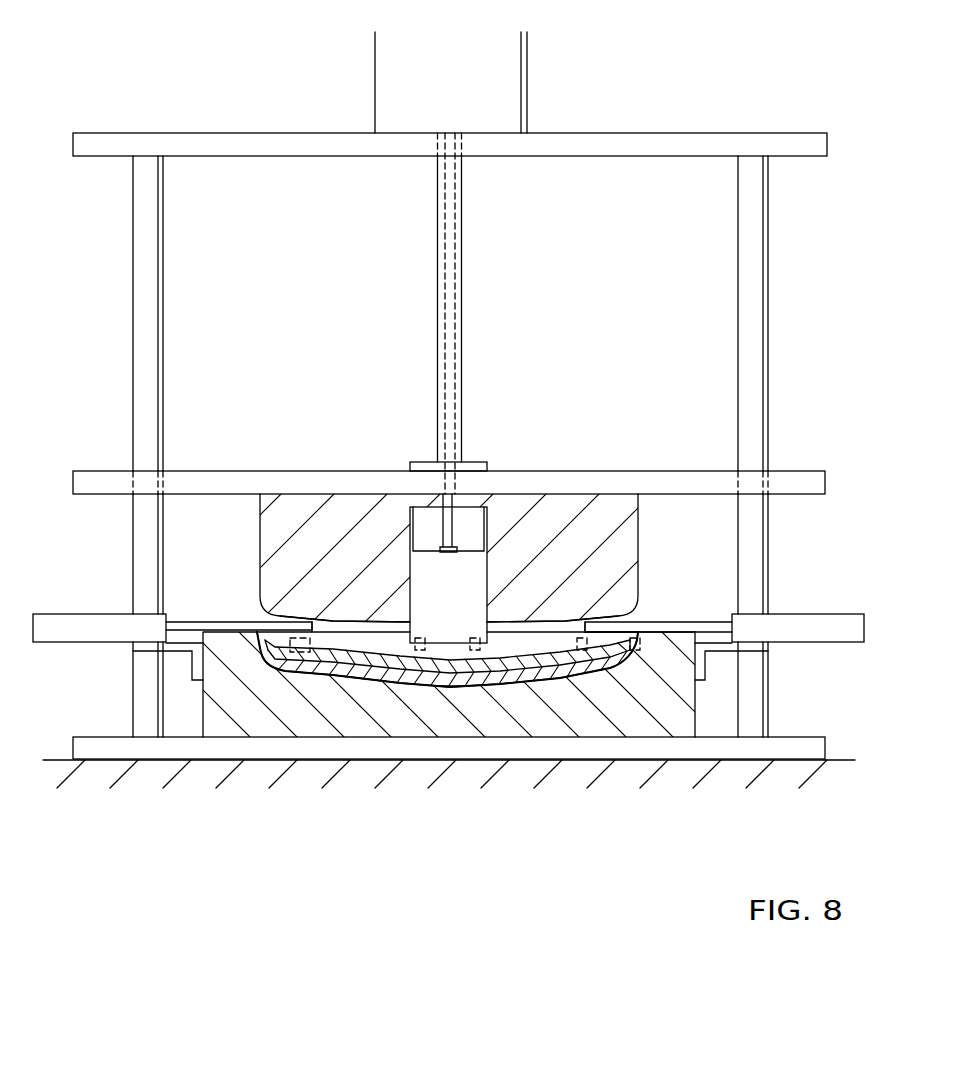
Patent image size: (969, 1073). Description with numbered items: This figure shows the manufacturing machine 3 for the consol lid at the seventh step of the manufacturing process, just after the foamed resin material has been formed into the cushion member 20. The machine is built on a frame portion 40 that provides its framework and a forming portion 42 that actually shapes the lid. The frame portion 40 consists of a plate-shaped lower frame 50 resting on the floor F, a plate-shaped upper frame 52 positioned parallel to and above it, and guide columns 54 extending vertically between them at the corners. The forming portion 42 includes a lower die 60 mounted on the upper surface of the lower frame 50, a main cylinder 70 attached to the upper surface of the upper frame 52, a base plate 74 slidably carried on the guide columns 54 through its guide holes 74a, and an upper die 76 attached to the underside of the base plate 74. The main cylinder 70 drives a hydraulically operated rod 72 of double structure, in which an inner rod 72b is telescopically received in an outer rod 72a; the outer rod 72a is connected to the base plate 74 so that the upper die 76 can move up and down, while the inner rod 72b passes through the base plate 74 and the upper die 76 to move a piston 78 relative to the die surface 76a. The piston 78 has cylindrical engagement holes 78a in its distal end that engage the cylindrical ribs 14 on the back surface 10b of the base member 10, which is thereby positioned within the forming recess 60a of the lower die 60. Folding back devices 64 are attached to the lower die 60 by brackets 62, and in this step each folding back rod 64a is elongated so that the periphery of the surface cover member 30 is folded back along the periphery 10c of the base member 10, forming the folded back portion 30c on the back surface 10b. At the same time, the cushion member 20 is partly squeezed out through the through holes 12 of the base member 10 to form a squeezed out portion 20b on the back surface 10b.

The manufacturing machine 3 is at (653, 76).
The base member 10 is at (457, 684).
The back surface 10b is at (578, 618).
The periphery 10c is at (253, 648).
The through holes 12 is at (293, 655).
The cylindrical ribs 14 is at (478, 677).
The cushion member 20 is at (432, 692).
The squeezed out portion 20b is at (318, 628).
The surface cover member 30 is at (462, 749).
The folded back portion 30c is at (280, 650).
The frame portion 40 is at (58, 348).
The forming portion 42 is at (815, 283).
The lower frame 50 is at (88, 747).
The upper frame 52 is at (93, 145).
The guide columns 54 is at (148, 400).
The lower die 60 is at (448, 637).
The forming recess 60a is at (552, 683).
The bracket 62 is at (176, 645).
The folding back devices 64 is at (448, 590).
The folding back rod 64a is at (217, 627).
The main cylinder 70 is at (490, 83).
The rod 72 is at (497, 342).
The outer rod 72a is at (458, 400).
The inner rod 72b is at (448, 442).
The base plate 74 is at (467, 411).
The guide holes 74a is at (164, 486).
The upper die 76 is at (456, 499).
The die surface 76a is at (320, 617).
The piston 78 is at (479, 668).
The engagement holes 78a is at (447, 644).
The floor F is at (843, 760).